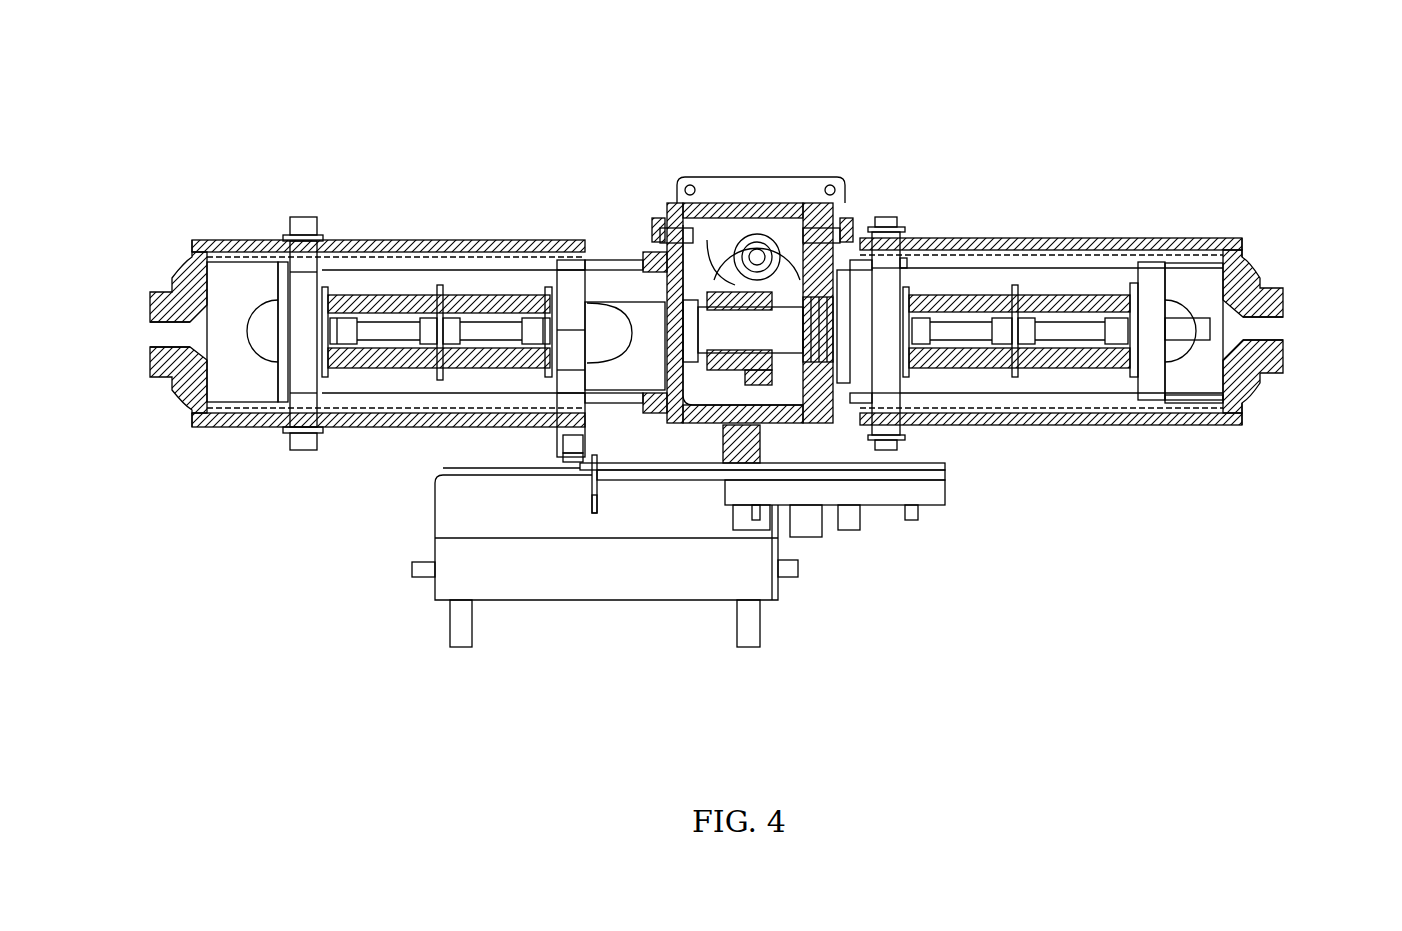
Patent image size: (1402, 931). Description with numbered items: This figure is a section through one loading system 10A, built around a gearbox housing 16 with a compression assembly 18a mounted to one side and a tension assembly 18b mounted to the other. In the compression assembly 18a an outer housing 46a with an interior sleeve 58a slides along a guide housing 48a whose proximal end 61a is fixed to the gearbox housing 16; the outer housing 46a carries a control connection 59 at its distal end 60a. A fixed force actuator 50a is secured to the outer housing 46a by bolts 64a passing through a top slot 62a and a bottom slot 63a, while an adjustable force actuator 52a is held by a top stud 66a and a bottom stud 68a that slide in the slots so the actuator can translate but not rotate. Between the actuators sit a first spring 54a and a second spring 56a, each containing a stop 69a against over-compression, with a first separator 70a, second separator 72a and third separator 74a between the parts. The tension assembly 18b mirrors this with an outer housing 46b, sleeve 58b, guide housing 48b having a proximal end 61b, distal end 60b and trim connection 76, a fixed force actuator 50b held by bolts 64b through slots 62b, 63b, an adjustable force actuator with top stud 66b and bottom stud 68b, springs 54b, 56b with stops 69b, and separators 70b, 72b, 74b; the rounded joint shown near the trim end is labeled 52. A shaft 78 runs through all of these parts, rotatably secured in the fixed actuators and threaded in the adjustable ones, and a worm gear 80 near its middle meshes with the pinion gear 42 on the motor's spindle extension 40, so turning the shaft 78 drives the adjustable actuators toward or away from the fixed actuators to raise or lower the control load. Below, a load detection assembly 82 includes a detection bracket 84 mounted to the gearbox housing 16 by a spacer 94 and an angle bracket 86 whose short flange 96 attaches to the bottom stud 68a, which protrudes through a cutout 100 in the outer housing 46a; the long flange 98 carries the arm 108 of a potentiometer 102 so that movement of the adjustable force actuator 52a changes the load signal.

The loading system 10A is at (1078, 618).
The gearbox housing 16 is at (667, 203).
The compression assembly 18a is at (360, 135).
The tension assembly 18b is at (1155, 505).
The spindle extension 40 is at (756, 255).
The pinion gear 42 is at (796, 215).
The outer housing 46a is at (207, 428).
The outer housing 46b is at (1075, 420).
The guide housing 48a is at (275, 427).
The guide housing 48b is at (1245, 238).
The fixed force actuator 50a is at (303, 295).
The fixed force actuator 50b is at (887, 292).
The ball joint 52 is at (1155, 362).
The adjustable force actuator 52a is at (568, 350).
The first spring 54a is at (358, 365).
The first spring 54b is at (980, 320).
The second spring 56a is at (460, 370).
The second spring 56b is at (1110, 300).
The interior sleeve 58a is at (232, 262).
The interior sleeve 58b is at (1118, 405).
The control connection 59 is at (143, 350).
The distal end 60a is at (140, 238).
The distal end 60b is at (1330, 362).
The proximal end 61a is at (637, 195).
The proximal end 61b is at (862, 195).
The top slot 62a is at (607, 263).
The top slot 62b is at (960, 263).
The bottom slot 63a is at (613, 403).
The bottom slot 63b is at (1005, 400).
The bolts 64a is at (295, 217).
The bolts 64b is at (878, 215).
The top stud 66a is at (555, 270).
The top stud 66b is at (1160, 268).
The bottom stud 68a is at (572, 420).
The bottom stud 68b is at (1195, 405).
The stop 69a is at (497, 330).
The stop 69b is at (987, 303).
The first separator 70a is at (328, 283).
The first separator 70b is at (910, 280).
The second separator 72a is at (437, 290).
The second separator 72b is at (1020, 285).
The third separator 74a is at (545, 285).
The third separator 74b is at (1136, 283).
The trim connection 76 is at (1285, 333).
The shaft 78 is at (647, 330).
The worm gear 80 is at (763, 377).
The load detection assembly 82 is at (845, 580).
The detection bracket 84 is at (842, 467).
The angle bracket 86 is at (577, 492).
The spacer 94 is at (760, 443).
The short flange 96 is at (575, 458).
The long flange 98 is at (600, 503).
The cutout 100 is at (508, 458).
The potentiometer 102 is at (920, 495).
The arm 108 is at (665, 488).